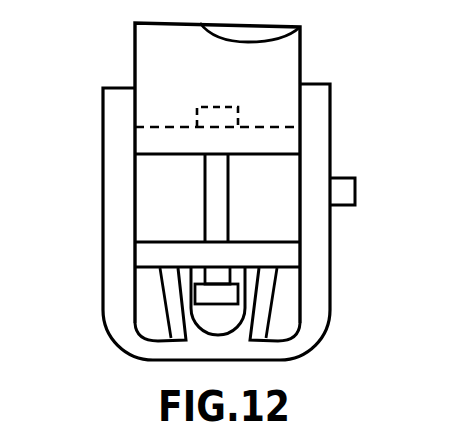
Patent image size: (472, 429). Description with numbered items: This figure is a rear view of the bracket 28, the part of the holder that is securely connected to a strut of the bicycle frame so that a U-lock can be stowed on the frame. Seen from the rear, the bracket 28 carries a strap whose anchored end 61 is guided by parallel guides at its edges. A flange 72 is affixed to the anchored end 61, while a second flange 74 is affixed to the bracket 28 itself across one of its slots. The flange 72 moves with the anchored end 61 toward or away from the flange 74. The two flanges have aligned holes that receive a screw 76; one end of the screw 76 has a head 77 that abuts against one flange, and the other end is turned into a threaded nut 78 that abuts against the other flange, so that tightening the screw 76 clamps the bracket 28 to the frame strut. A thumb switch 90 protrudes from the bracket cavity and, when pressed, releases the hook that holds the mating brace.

The anchored end 61 is at (134, 40).
The bracket 28 is at (331, 125).
The threaded nut 78 is at (197, 115).
The flange 72 is at (155, 142).
The screw 76 is at (230, 212).
The flange 74 is at (138, 258).
The head 77 is at (200, 295).
The thumb switch 90 is at (356, 197).